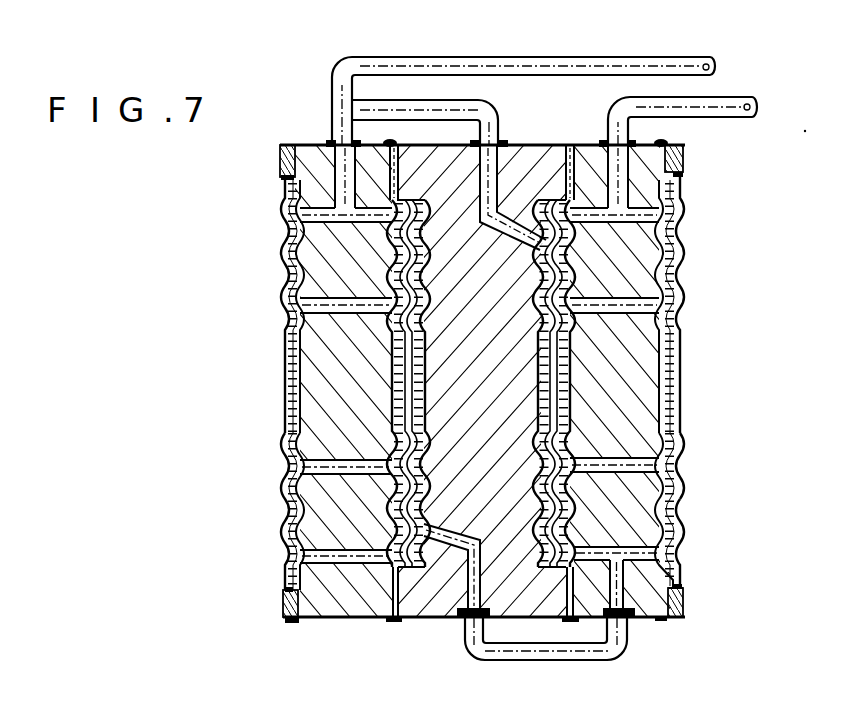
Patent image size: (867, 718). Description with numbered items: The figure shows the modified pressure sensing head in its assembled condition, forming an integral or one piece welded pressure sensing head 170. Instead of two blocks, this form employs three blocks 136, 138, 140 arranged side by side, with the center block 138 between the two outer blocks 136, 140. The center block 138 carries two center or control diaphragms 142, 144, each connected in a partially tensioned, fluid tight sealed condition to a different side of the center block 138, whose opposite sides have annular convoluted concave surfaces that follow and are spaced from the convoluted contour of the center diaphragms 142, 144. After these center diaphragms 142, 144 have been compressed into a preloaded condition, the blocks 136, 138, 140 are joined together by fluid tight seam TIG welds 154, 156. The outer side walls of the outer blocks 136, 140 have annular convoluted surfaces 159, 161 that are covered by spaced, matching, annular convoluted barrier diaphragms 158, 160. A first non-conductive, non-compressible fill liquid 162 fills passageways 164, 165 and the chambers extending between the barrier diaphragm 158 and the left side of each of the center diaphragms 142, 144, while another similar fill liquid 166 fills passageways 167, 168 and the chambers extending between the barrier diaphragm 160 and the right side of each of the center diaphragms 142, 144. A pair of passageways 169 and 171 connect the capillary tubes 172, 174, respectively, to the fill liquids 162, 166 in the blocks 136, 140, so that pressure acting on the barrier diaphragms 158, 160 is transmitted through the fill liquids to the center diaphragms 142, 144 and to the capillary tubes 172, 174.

The block 136 is at (347, 562).
The center block 138 is at (456, 583).
The block 140 is at (650, 600).
The center diaphragm 142 is at (440, 357).
The center diaphragm 144 is at (683, 422).
The seam TIG weld 154 is at (397, 612).
The seam TIG weld 156 is at (570, 620).
The barrier diaphragm 158 is at (285, 497).
The annular convoluted surface 159 is at (312, 438).
The barrier diaphragm 160 is at (683, 398).
The annular convoluted surface 161 is at (655, 348).
The fill liquid 162 is at (285, 537).
The passageway 164 is at (503, 148).
The passageway 165 is at (292, 258).
The fill liquid 166 is at (683, 445).
The passageway 167 is at (470, 645).
The passageway 168 is at (532, 345).
The passageway 169 is at (343, 196).
The pressure sensing head 170 is at (262, 622).
The passageway 171 is at (672, 198).
The capillary tube 172 is at (500, 57).
The capillary tube 174 is at (718, 97).